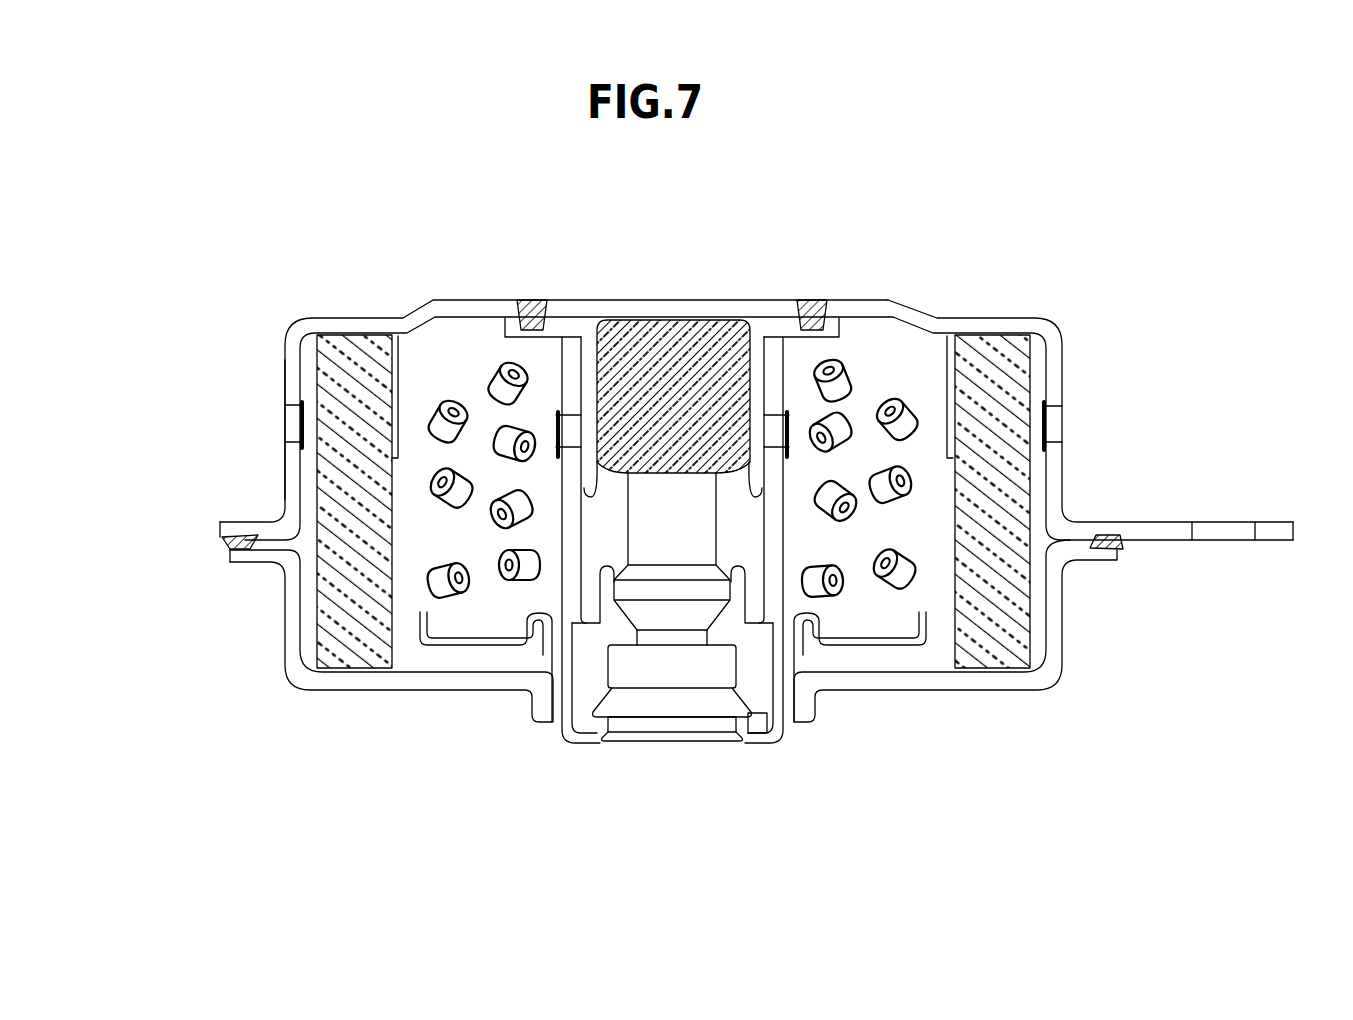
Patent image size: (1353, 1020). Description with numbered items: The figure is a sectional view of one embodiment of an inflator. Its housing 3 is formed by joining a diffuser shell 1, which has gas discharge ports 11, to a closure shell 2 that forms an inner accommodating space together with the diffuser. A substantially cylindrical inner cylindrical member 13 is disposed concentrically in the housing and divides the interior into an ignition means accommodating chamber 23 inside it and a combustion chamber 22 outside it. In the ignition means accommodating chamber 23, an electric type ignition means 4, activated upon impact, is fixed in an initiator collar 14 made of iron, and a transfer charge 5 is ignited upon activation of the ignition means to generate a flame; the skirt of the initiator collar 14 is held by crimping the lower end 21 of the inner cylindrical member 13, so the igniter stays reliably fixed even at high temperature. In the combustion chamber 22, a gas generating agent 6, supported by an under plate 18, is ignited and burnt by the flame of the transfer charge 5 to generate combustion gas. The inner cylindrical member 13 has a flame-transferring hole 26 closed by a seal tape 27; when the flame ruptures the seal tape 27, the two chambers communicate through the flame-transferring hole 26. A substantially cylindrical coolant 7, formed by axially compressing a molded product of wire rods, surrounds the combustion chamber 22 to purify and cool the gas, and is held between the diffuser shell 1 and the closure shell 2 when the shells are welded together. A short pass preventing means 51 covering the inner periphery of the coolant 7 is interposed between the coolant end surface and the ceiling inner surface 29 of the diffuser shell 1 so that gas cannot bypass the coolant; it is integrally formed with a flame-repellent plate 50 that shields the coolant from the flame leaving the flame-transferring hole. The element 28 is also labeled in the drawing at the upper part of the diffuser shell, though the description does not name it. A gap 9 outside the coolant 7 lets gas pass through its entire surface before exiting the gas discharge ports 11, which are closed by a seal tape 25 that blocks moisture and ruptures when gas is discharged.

The diffuser shell 1 is at (283, 488).
The closure shell 2 is at (283, 588).
The housing 3 is at (118, 520).
The ignition means 4 is at (650, 503).
The transfer charge 5 is at (704, 370).
The gas generating agent 6 is at (903, 425).
The coolant 7 is at (372, 645).
The gap 9 is at (1032, 484).
The gas discharge port 11 is at (283, 418).
The inner cylindrical member 13 is at (778, 568).
The initiator collar 14 is at (592, 693).
The under plate 18 is at (467, 645).
The lower end 21 is at (765, 743).
The combustion chamber 22 is at (481, 366).
The ignition means accommodating chamber 23 is at (690, 385).
The seal tape 25 is at (318, 415).
The flame-transferring hole 26 is at (572, 423).
The seal tape 27 is at (790, 425).
The top wall 28 is at (357, 350).
The ceiling inner surface 29 is at (402, 336).
The flame-repellent plate 50 is at (945, 372).
The short pass preventing means 51 is at (942, 407).